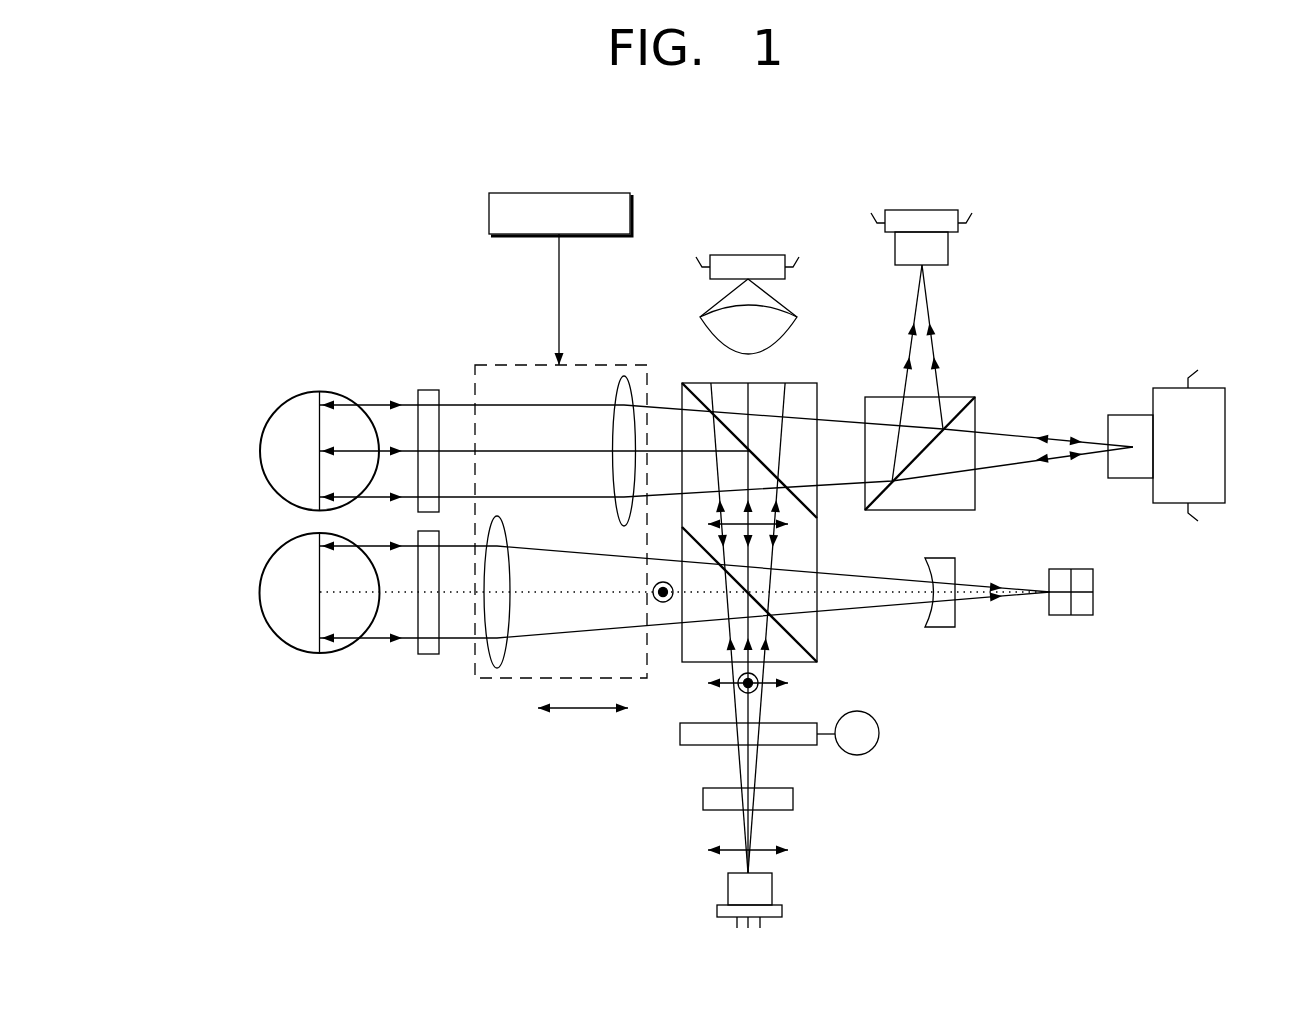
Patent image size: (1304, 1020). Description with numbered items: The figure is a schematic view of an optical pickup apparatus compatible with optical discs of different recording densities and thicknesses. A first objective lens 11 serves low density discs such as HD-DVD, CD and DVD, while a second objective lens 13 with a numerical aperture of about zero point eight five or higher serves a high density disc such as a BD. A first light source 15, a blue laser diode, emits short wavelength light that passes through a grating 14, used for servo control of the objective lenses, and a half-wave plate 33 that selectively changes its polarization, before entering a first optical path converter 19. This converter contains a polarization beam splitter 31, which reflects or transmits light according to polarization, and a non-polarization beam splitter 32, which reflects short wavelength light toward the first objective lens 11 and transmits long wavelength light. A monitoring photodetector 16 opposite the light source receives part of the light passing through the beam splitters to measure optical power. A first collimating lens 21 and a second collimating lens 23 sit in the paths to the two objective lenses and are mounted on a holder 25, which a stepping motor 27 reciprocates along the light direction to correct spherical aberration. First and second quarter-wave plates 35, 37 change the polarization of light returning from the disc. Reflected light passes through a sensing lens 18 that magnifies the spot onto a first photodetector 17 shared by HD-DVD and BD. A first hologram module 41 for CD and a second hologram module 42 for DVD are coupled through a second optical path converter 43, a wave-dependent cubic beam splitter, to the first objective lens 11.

The first objective lens 11 is at (273, 415).
The second objective lens 13 is at (274, 633).
The grating 14 is at (703, 797).
The first light source 15 is at (728, 891).
The monitoring photodetector 16 is at (745, 255).
The first photodetector 17 is at (1095, 592).
The sensing lens 18 is at (937, 627).
The first optical path converter 19 is at (832, 628).
The first collimating lens 21 is at (620, 378).
The second collimating lens 23 is at (486, 649).
The holder 25 is at (500, 680).
The stepping motor 27 is at (559, 193).
The polarization beam splitter 31 is at (806, 640).
The non-polarization beam splitter 32 is at (730, 432).
The half-wave plate 33 is at (680, 733).
The first quarter-wave plate 35 is at (430, 390).
The second quarter-wave plate 37 is at (414, 652).
The first hologram module 41 is at (962, 240).
The second hologram module 42 is at (1227, 445).
The second optical path converter 43 is at (960, 397).